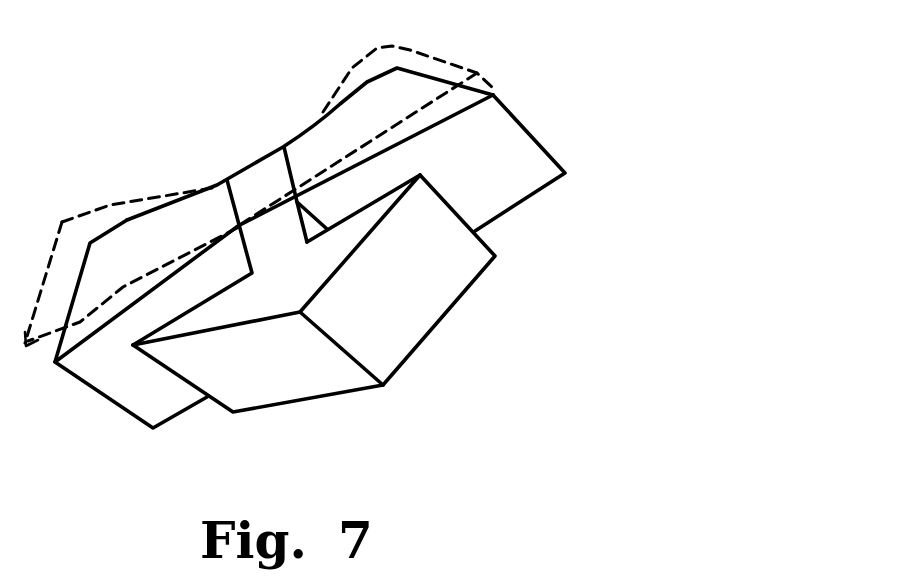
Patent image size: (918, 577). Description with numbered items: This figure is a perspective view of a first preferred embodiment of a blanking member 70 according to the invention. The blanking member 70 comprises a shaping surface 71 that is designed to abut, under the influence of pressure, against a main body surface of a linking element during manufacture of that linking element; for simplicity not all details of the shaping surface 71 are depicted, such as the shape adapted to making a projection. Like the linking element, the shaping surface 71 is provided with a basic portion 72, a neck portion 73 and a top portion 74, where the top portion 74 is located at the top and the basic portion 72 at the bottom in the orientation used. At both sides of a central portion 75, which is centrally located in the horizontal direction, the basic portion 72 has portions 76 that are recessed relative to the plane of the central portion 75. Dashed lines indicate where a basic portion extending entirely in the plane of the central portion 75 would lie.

The blanking member 70 is at (120, 114).
The shaping surface 71 is at (115, 260).
The basic portion 72 is at (308, 134).
The neck portion 73 is at (270, 237).
The top portion 74 is at (250, 303).
The central portion 75 is at (265, 197).
The recessed portions 76 is at (460, 98).